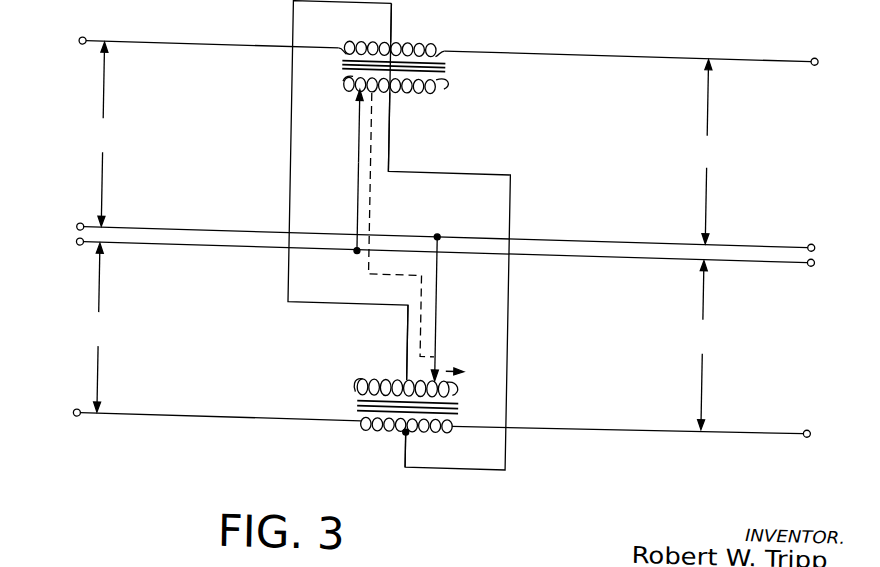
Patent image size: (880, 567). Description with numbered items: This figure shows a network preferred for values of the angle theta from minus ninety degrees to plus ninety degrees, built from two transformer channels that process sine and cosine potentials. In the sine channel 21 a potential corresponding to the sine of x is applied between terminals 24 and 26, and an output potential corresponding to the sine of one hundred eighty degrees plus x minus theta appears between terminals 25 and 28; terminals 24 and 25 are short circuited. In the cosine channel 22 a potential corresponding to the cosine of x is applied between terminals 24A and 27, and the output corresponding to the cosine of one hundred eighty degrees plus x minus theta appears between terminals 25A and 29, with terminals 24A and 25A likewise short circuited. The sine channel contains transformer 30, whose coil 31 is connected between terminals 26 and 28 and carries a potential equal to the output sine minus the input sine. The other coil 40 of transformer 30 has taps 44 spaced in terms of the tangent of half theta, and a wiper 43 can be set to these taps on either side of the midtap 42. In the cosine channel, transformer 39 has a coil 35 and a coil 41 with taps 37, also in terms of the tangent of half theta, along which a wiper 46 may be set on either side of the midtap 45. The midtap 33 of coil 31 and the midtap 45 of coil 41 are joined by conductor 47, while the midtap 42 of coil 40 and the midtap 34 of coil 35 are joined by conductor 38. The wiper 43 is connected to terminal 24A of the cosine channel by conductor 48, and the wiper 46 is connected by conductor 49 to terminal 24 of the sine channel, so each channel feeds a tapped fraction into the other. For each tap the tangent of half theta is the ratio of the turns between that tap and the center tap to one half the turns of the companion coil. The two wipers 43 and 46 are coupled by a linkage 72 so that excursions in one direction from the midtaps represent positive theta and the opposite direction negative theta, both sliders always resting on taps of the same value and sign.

The sine channel 21 is at (196, 146).
The cosine channel 22 is at (209, 349).
The terminal 24 is at (74, 235).
The terminal 24A is at (78, 255).
The terminal 25 is at (814, 235).
The terminal 25A is at (814, 254).
The terminal 26 is at (76, 49).
The terminal 27 is at (77, 425).
The terminal 28 is at (814, 49).
The terminal 29 is at (813, 425).
The transformer 30 is at (448, 72).
The coil 31 is at (415, 48).
The midtap 33 is at (388, 46).
The midtap 34 is at (410, 433).
The coil 35 is at (388, 432).
The taps 37 is at (369, 382).
The conductor 38 is at (509, 206).
The transformer 39 is at (352, 406).
The coil 40 is at (441, 89).
The coil 41 is at (455, 395).
The midtap 42 is at (387, 94).
The wiper 43 is at (357, 104).
The taps 44 is at (342, 100).
The midtap 45 is at (408, 380).
The wiper 46 is at (439, 375).
The conductor 47 is at (289, 204).
The conductor 48 is at (356, 163).
The conductor 49 is at (437, 320).
The linkage 72 is at (370, 218).